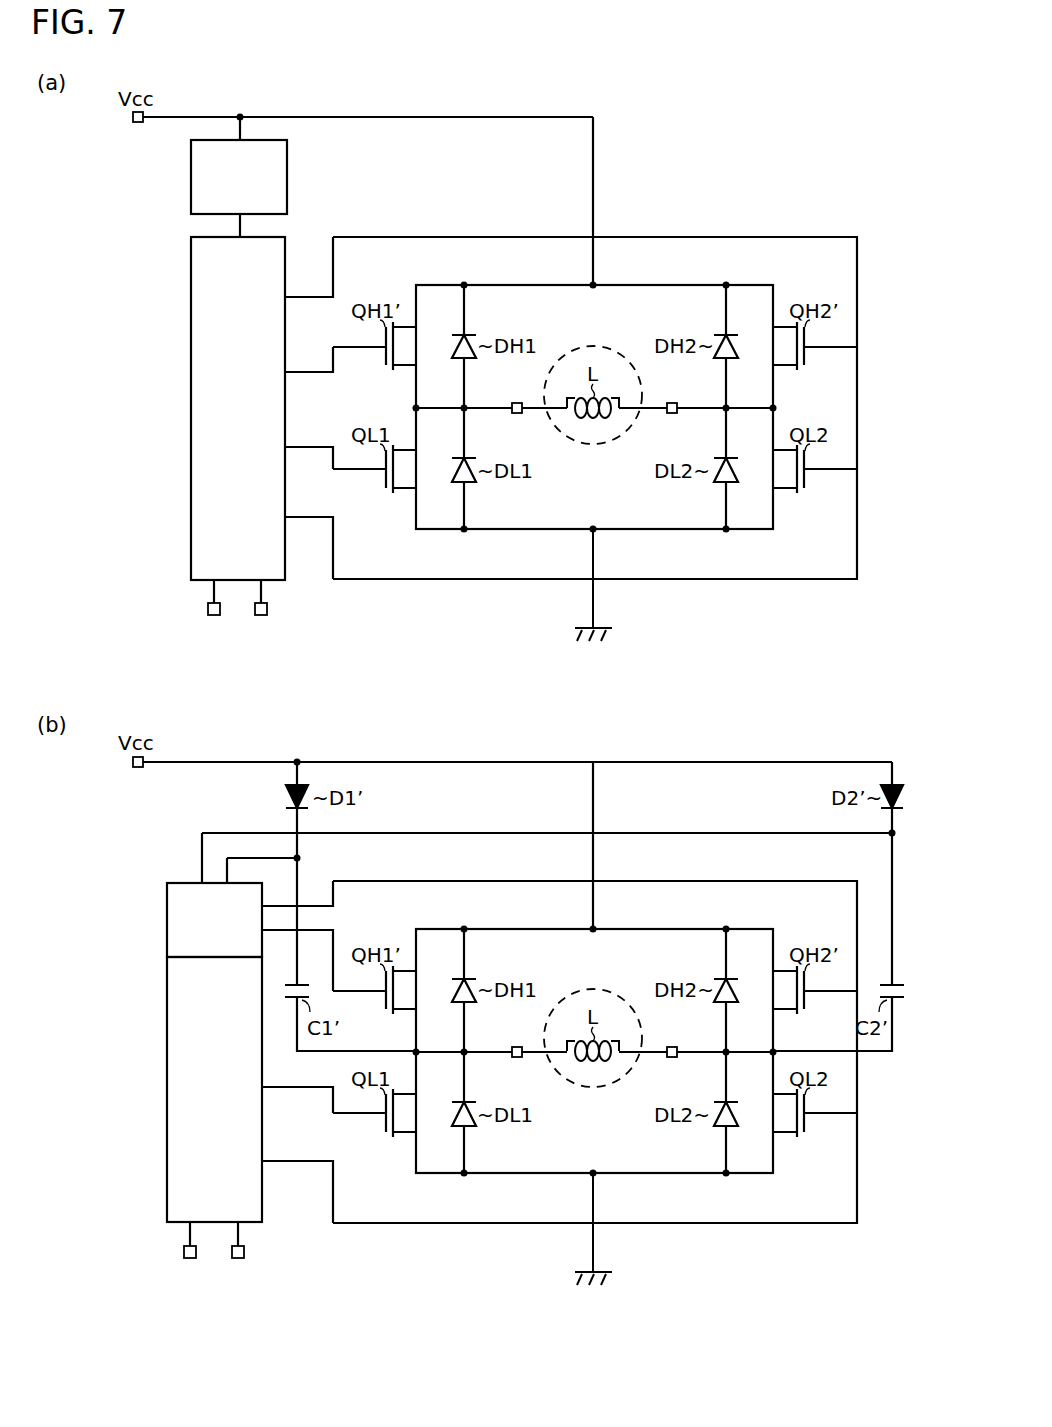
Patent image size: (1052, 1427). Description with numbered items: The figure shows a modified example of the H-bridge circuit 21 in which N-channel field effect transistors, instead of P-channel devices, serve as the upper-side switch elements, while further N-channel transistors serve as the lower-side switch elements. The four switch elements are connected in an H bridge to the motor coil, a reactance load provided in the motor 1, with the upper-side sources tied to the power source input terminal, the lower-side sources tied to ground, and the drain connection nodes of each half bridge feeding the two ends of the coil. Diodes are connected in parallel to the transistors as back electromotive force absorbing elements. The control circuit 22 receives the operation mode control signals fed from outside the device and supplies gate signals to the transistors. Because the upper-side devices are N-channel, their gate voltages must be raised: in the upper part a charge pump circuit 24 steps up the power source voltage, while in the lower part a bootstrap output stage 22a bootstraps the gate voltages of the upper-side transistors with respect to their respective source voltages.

The motor 1 is at (593, 445).
The H-bridge circuit 21 is at (738, 623).
The control circuit 22 is at (191, 409).
The bootstrap output stage 22a is at (166, 921).
The charge pump circuit 24 is at (191, 178).